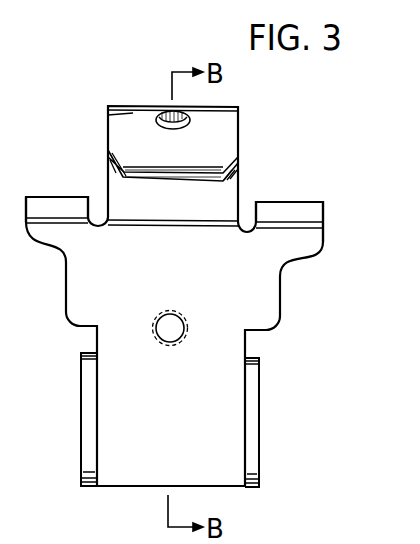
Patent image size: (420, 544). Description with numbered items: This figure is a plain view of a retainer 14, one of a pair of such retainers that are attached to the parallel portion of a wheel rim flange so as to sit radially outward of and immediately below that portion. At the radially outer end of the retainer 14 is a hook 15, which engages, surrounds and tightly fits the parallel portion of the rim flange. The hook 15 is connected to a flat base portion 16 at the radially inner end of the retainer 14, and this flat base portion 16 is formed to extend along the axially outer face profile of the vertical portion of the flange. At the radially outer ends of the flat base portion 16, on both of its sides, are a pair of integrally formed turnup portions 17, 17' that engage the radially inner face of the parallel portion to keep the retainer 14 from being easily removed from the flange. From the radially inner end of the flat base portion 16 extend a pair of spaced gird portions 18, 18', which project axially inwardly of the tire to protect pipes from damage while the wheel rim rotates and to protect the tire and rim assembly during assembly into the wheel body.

The retainer 14 is at (240, 116).
The hook 15 is at (121, 120).
The flat base portion 16 is at (118, 288).
The turnup portion 17 is at (289, 200).
The turnup portion 17' is at (57, 187).
The gird portion 18 is at (274, 422).
The gird portion 18' is at (72, 419).